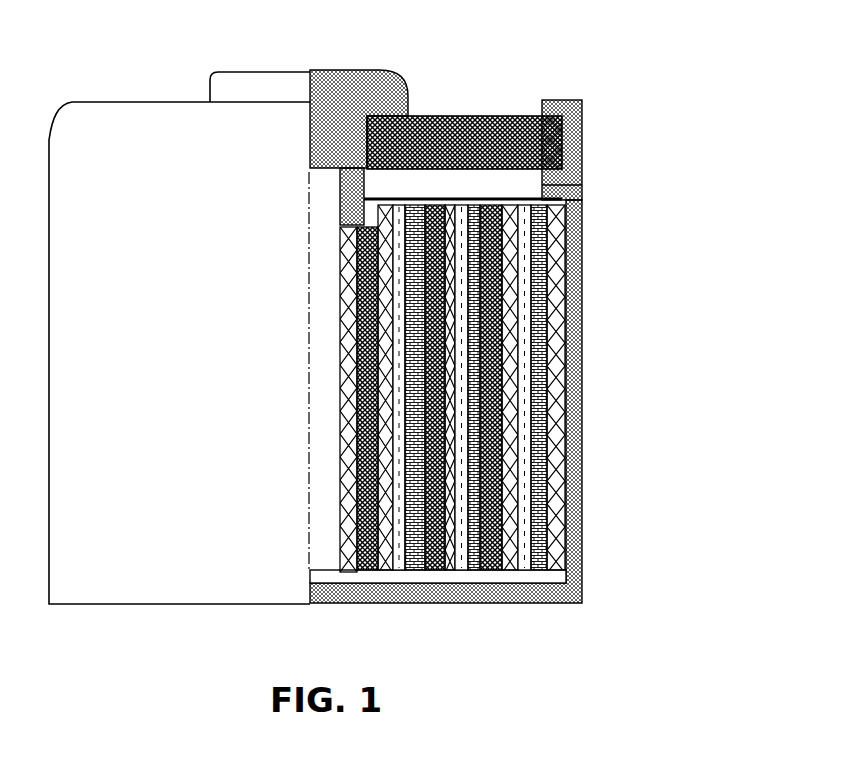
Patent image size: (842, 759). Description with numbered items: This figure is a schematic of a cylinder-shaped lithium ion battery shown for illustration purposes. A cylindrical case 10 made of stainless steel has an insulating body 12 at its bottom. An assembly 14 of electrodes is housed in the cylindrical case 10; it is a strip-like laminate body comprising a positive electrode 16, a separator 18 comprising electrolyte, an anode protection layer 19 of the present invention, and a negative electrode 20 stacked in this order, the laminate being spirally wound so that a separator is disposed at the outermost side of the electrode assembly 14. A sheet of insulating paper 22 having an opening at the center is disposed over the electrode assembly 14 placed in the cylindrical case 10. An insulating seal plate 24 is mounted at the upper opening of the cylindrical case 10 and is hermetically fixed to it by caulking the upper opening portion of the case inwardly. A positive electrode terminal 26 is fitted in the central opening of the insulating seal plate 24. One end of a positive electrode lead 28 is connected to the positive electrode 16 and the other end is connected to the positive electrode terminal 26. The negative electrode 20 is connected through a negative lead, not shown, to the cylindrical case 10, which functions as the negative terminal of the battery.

The cylindrical case 10 is at (573, 528).
The insulating body 12 is at (510, 575).
The assembly of electrodes 14 is at (540, 388).
The positive electrode 16 is at (502, 245).
The separator 18 is at (508, 278).
The anode protection layer 19 is at (525, 353).
The negative electrode 20 is at (660, 242).
The insulating paper 22 is at (562, 202).
The insulating seal plate 24 is at (470, 125).
The positive electrode terminal 26 is at (375, 92).
The positive electrode lead 28 is at (347, 196).